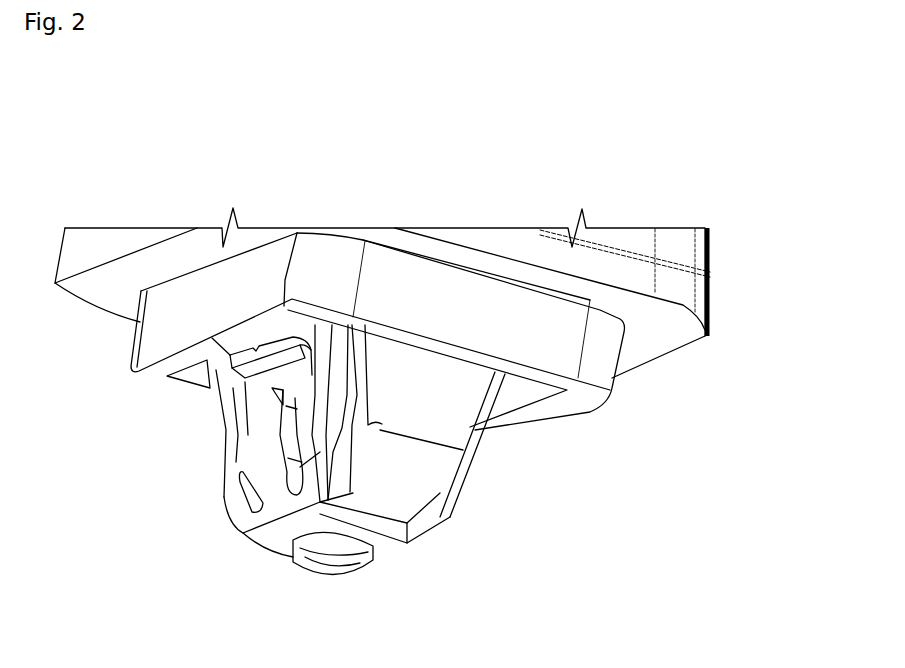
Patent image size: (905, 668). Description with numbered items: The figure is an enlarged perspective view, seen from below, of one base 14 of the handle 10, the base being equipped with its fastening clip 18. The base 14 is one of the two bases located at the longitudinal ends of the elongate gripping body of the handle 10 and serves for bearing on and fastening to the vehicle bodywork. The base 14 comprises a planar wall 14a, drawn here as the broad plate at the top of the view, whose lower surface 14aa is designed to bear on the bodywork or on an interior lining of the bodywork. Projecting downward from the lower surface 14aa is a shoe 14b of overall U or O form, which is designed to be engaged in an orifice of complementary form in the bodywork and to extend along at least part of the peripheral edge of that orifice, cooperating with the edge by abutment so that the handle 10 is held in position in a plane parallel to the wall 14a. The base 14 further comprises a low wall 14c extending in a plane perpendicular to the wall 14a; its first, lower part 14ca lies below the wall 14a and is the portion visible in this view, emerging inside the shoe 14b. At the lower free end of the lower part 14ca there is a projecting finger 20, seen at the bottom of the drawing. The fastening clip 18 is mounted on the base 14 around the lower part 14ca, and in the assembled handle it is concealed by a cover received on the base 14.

The handle 10 is at (411, 358).
The base 14 is at (680, 290).
The planar wall 14a is at (672, 338).
The lower surface 14aa is at (463, 253).
The shoe 14b is at (573, 408).
The low wall 14c is at (437, 467).
The lower part 14ca is at (462, 433).
The fastening clip 18 is at (405, 547).
The projecting finger 20 is at (340, 567).